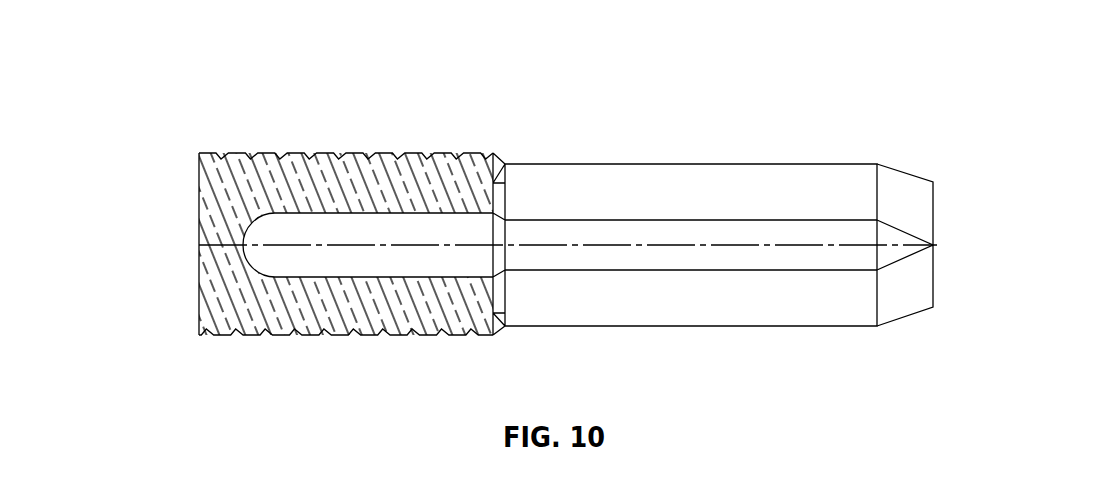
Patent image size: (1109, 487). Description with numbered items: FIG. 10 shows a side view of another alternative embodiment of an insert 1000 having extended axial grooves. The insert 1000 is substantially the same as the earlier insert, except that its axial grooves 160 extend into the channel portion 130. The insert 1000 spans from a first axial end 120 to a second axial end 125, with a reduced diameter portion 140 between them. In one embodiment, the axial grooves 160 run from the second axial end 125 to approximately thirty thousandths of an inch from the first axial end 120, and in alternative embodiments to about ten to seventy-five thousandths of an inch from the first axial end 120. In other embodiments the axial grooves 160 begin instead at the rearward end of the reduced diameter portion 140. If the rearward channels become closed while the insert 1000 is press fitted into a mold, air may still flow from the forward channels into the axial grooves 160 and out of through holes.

The insert 1000 is at (159, 111).
The first axial end 120 is at (200, 227).
The channel portion 130 is at (381, 108).
The reduced diameter portion 140 is at (772, 150).
The axial grooves 160 is at (633, 230).
The second axial end 125 is at (934, 217).